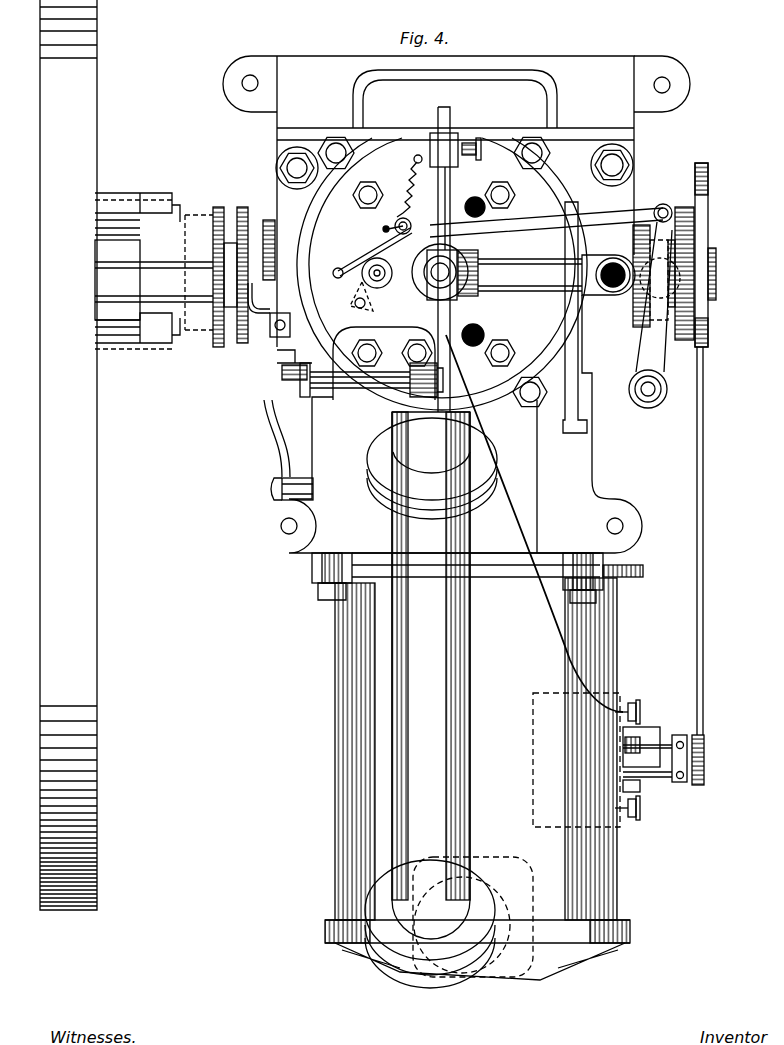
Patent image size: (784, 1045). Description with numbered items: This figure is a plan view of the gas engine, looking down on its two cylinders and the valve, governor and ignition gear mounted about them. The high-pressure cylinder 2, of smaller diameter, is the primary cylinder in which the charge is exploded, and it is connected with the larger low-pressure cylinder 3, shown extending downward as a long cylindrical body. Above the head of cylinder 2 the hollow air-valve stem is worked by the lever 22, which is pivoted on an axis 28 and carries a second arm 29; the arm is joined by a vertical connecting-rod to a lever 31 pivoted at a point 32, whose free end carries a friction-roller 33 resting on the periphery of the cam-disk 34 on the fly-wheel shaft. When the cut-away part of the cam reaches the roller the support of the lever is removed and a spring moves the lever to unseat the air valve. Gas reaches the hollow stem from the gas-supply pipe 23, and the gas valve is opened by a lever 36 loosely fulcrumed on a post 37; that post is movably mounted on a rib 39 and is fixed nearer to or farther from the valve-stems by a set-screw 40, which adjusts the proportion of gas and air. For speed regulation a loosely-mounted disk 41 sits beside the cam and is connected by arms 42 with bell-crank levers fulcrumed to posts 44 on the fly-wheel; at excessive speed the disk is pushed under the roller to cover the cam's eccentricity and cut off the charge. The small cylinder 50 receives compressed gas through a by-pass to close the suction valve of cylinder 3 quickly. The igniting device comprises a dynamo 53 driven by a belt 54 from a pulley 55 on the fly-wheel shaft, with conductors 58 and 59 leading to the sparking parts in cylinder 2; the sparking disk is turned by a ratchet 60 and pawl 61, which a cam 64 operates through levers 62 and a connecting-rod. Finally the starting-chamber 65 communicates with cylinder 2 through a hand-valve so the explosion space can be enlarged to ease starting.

The high-pressure cylinder 2 is at (442, 274).
The low-pressure cylinder 3 is at (477, 766).
The lever 22 is at (352, 392).
The gas-supply pipe 23 is at (556, 275).
The axis 28 is at (276, 382).
The second arm 29 is at (306, 352).
The lever 31 is at (277, 455).
The pivot point 32 is at (272, 489).
The friction-roller 33 is at (235, 275).
The cam-disk 34 is at (243, 207).
The lever 36 is at (443, 205).
The post 37 is at (448, 132).
The rib 39 is at (452, 190).
The set-screw 40 is at (470, 147).
The loosely-mounted disk 41 is at (232, 335).
The arms 42 is at (186, 222).
The posts 44 is at (120, 205).
The small cylinder 50 is at (270, 337).
The dynamo 53 is at (663, 780).
The belt 54 is at (703, 647).
The pulley 55 is at (708, 322).
The conductor 58 is at (612, 698).
The conductor 59 is at (617, 830).
The ratchet 60 is at (379, 285).
The pawl 61 is at (366, 305).
The levers 62 is at (605, 222).
The cam 64 is at (668, 235).
The starting-chamber 65 is at (646, 392).